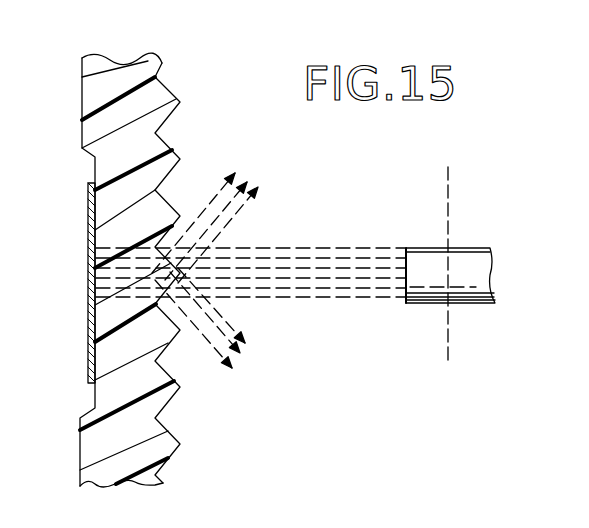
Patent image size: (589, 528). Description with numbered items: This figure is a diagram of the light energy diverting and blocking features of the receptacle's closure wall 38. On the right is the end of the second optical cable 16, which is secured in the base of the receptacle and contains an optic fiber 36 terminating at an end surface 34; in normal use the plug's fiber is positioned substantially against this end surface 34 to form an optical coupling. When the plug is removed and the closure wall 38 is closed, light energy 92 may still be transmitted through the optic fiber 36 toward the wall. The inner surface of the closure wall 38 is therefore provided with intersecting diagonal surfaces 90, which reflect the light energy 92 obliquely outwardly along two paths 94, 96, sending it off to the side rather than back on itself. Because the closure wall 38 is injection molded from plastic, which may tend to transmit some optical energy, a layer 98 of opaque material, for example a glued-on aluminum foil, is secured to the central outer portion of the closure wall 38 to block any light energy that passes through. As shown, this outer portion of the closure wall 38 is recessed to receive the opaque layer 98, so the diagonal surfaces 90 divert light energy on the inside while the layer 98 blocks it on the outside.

The closure wall 38 is at (82, 88).
The intersecting diagonal surfaces 90 is at (160, 185).
The layer of opaque material 98 is at (88, 267).
The light energy 92 is at (338, 248).
The path 94 is at (228, 183).
The path 96 is at (244, 352).
The second optical cable 16 is at (485, 212).
The end surface 34 is at (404, 283).
The optic fiber 36 is at (477, 289).